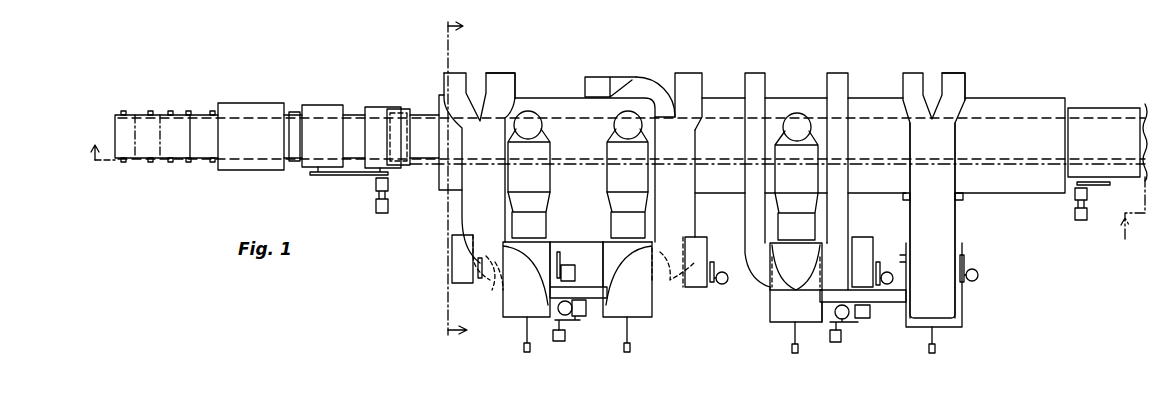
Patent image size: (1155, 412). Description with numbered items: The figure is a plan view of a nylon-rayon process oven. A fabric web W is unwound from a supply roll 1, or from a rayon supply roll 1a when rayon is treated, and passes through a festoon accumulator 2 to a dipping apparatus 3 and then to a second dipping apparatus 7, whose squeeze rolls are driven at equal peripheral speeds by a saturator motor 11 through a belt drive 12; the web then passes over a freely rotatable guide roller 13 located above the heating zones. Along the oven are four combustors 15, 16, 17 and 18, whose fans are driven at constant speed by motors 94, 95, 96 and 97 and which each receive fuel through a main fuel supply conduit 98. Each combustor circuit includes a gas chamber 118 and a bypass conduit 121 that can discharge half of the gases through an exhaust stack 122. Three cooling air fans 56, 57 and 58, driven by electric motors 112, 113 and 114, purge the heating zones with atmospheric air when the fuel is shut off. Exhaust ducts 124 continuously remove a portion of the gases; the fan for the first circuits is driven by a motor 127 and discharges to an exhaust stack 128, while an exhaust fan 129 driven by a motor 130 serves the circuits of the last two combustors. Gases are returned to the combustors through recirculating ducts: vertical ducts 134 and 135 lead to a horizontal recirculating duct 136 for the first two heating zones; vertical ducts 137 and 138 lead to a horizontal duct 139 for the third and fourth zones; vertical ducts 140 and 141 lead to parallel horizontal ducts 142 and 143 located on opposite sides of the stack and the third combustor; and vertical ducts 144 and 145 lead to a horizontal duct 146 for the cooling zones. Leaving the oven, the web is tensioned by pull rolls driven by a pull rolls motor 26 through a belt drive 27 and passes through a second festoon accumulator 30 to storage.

The supply roll 1 is at (115, 118).
The rayon supply roll 1a is at (137, 112).
The fabric web W is at (180, 150).
The festoon accumulator 2 is at (242, 103).
The dipping apparatus 3 is at (322, 105).
The second dipping apparatus 7 is at (372, 107).
The guide roller 13 is at (392, 109).
The belt drive 12 is at (338, 176).
The saturator motor 11 is at (381, 215).
The vertically extending recirculating duct 134 is at (443, 72).
The vertically extending recirculating duct 135 is at (500, 73).
The horizontal recirculating duct 136 is at (462, 210).
The vertically extending duct 137 is at (593, 77).
The vertically extending duct 138 is at (690, 73).
The horizontal recirculating duct 139 is at (690, 200).
The vertically extending recirculating duct 140 is at (757, 73).
The vertically extending recirculating duct 141 is at (838, 73).
The horizontal recirculating duct 142 is at (748, 135).
The horizontal recirculating duct 143 is at (840, 218).
The vertical recirculating duct 144 is at (913, 73).
The vertical recirculating duct 145 is at (953, 73).
The horizontal recirculating duct 146 is at (955, 213).
The exhaust stack 122 is at (530, 112).
The bypass conduit 121 is at (613, 176).
The gas chamber 118 is at (618, 223).
The motor 94 is at (568, 265).
The motor 95 is at (663, 270).
The motor 96 is at (818, 252).
The cooling air fan 56 is at (455, 268).
The electric motor 112 is at (490, 282).
The exhaust stack 128 is at (557, 307).
The combustor 15 is at (512, 320).
The combustor 16 is at (646, 322).
The combustor 17 is at (770, 323).
The combustor 18 is at (963, 326).
The main fuel supply conduit 98 is at (527, 353).
The exhaust duct 124 is at (594, 300).
The motor 127 is at (560, 343).
The exhaust fan 129 is at (860, 320).
The motor 130 is at (840, 344).
The cooling air fan 57 is at (698, 288).
The electric motor 113 is at (722, 284).
The cooling air fan 58 is at (862, 242).
The electric motor 114 is at (889, 288).
The motor 97 is at (976, 271).
The festoon accumulator 30 is at (1094, 108).
The belt drive 27 is at (1098, 186).
The pull rolls motor 26 is at (1079, 221).